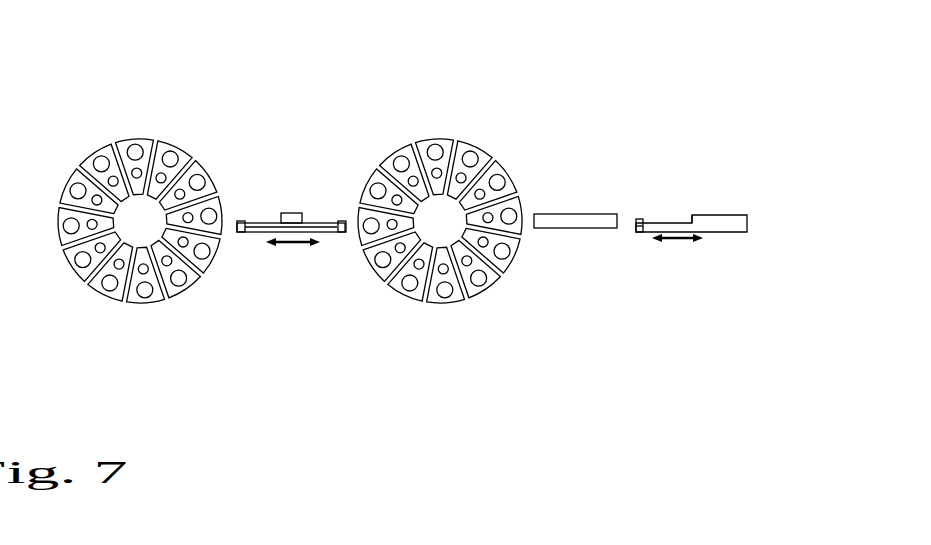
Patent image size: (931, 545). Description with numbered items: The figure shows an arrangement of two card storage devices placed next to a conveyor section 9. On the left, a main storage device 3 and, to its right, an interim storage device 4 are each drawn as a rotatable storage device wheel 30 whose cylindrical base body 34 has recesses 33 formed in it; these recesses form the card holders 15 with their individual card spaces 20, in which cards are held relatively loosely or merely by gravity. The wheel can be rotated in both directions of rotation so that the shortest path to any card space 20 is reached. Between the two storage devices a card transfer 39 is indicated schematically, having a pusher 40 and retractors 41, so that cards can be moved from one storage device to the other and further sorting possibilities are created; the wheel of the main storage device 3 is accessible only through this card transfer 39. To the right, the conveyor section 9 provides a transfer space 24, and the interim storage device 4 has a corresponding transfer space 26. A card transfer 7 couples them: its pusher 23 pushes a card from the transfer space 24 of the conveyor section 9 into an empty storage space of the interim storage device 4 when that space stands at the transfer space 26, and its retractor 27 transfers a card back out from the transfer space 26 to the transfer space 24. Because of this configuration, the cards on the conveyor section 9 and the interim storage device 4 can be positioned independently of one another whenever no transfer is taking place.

The main storage device 3 is at (69, 296).
The card holders 15 is at (118, 297).
The card spaces 20 is at (165, 297).
The storage device wheel 30 is at (117, 150).
The recesses 33 is at (152, 150).
The cylindrical base body 34 is at (182, 158).
The card transfer 39 is at (306, 202).
The pusher 40 is at (297, 213).
The retractor 41 is at (239, 233).
The transfer space 26 is at (656, 292).
The conveyor section 9 is at (597, 230).
The transfer space 24 is at (664, 232).
The interim storage device 4 is at (664, 232).
The pusher 23 is at (714, 168).
The card transfer 7 is at (680, 206).
The retractor 27 is at (644, 220).